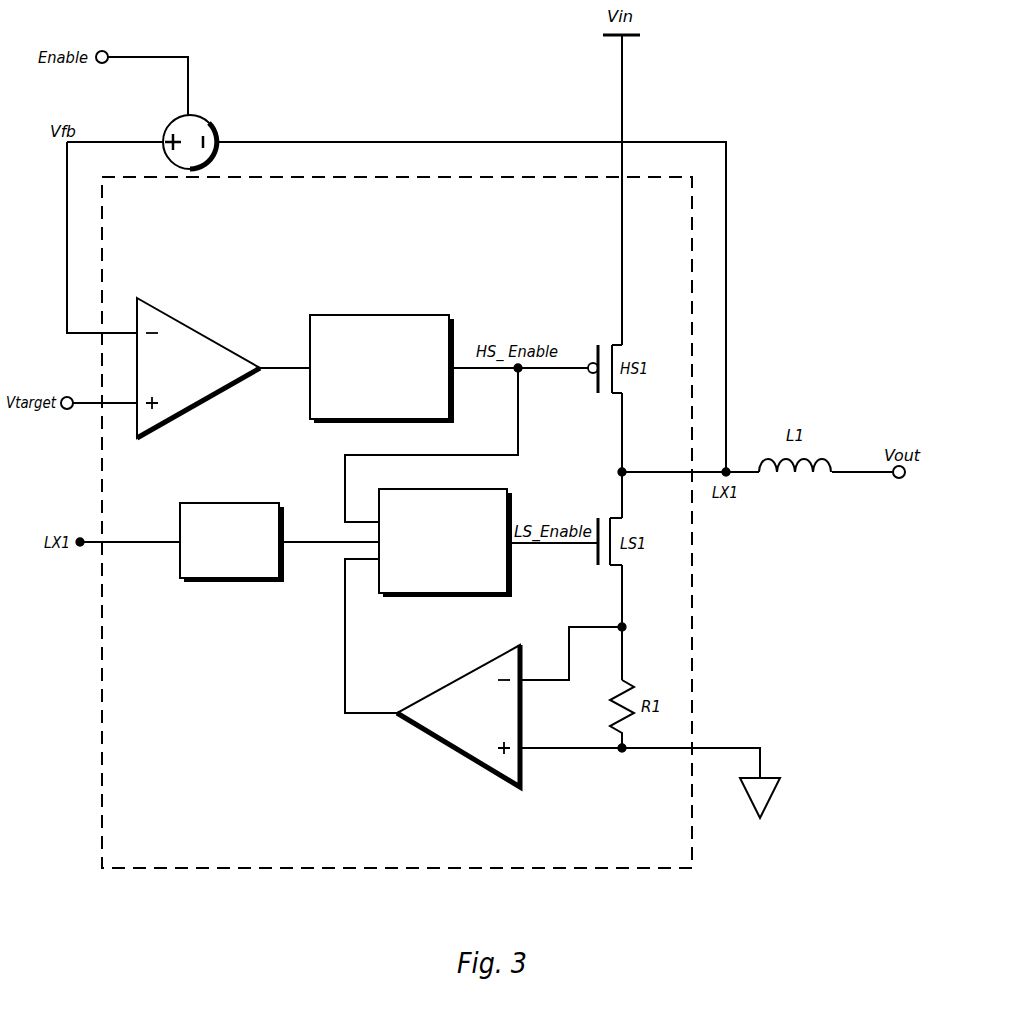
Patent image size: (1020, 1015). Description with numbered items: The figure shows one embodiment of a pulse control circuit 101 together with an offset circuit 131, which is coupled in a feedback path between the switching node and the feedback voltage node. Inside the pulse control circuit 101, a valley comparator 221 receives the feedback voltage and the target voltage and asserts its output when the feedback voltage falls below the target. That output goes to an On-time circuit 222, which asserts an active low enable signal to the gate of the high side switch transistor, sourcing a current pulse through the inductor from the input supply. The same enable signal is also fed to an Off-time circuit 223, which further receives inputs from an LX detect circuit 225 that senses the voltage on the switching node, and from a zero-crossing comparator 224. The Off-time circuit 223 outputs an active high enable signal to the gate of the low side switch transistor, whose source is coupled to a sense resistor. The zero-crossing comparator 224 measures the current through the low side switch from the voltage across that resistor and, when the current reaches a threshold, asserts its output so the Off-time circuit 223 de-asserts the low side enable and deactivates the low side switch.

The pulse control circuit 101 is at (397, 522).
The offset circuit 131 is at (212, 120).
The valley comparator 221 is at (177, 308).
The On-time circuit 222 is at (381, 368).
The Off-time circuit 223 is at (444, 542).
The zero-crossing comparator 224 is at (438, 750).
The LX detect circuit 225 is at (231, 541).